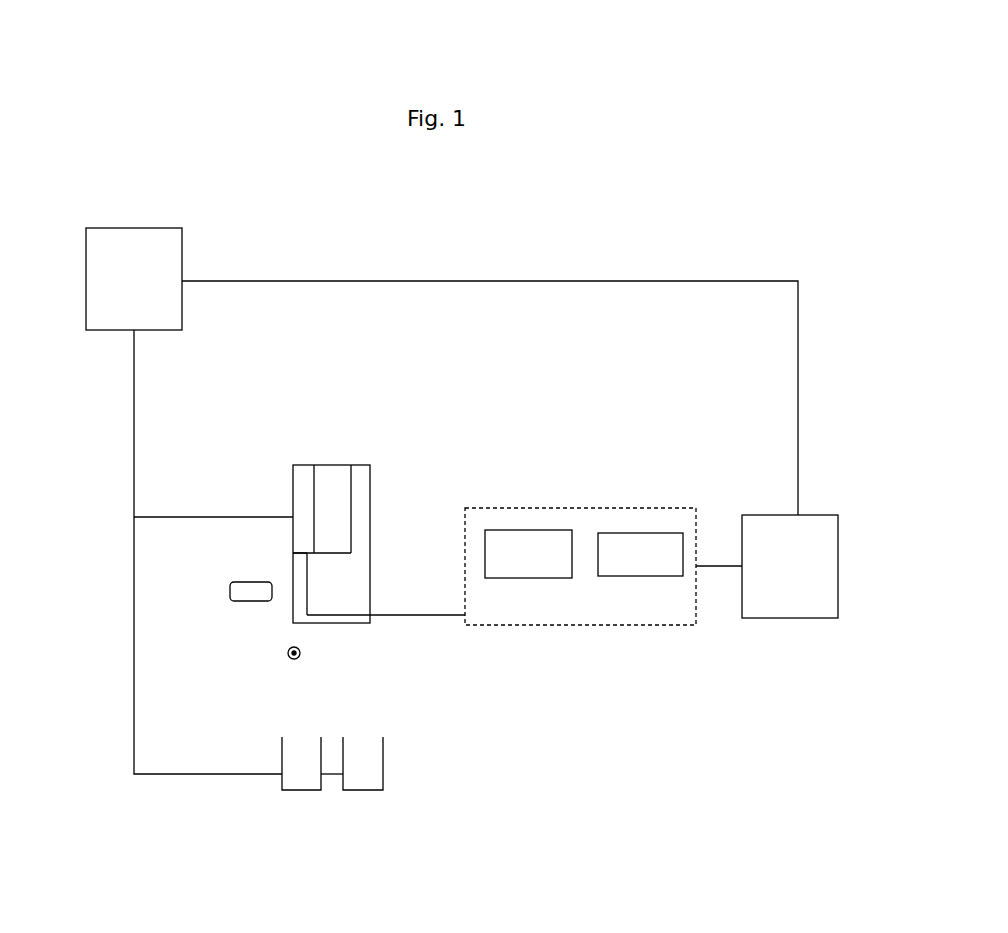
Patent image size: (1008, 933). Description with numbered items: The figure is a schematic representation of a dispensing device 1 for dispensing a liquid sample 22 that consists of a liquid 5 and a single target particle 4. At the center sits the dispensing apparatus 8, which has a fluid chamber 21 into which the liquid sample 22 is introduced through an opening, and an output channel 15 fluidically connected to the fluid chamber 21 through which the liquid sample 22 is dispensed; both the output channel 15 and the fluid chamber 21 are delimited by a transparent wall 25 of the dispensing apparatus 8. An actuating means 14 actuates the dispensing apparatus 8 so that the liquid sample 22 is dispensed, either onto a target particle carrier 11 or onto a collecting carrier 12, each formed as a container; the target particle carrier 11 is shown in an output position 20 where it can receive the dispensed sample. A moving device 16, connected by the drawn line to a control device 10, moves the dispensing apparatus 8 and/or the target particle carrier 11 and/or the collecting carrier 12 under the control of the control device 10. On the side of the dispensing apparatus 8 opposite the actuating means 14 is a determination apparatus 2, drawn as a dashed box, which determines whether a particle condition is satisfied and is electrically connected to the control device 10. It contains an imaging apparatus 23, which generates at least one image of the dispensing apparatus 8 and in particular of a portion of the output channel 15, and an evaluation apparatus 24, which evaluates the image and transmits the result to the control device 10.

The dispensing device 1 is at (781, 106).
The determination apparatus 2 is at (578, 612).
The single target particle 4 is at (288, 657).
The liquid 5 is at (300, 660).
The dispensing apparatus 8 is at (388, 424).
The control device 10 is at (790, 566).
The target particle carrier 11 is at (304, 780).
The collecting carrier 12 is at (362, 775).
The actuating means 14 is at (249, 593).
The output channel 15 is at (300, 572).
The moving device 16 is at (134, 279).
The output position 20 is at (303, 802).
The fluid chamber 21 is at (337, 487).
The liquid sample 22 is at (285, 682).
The imaging apparatus 23 is at (517, 545).
The evaluation apparatus 24 is at (641, 542).
The transparent wall 25 is at (355, 577).